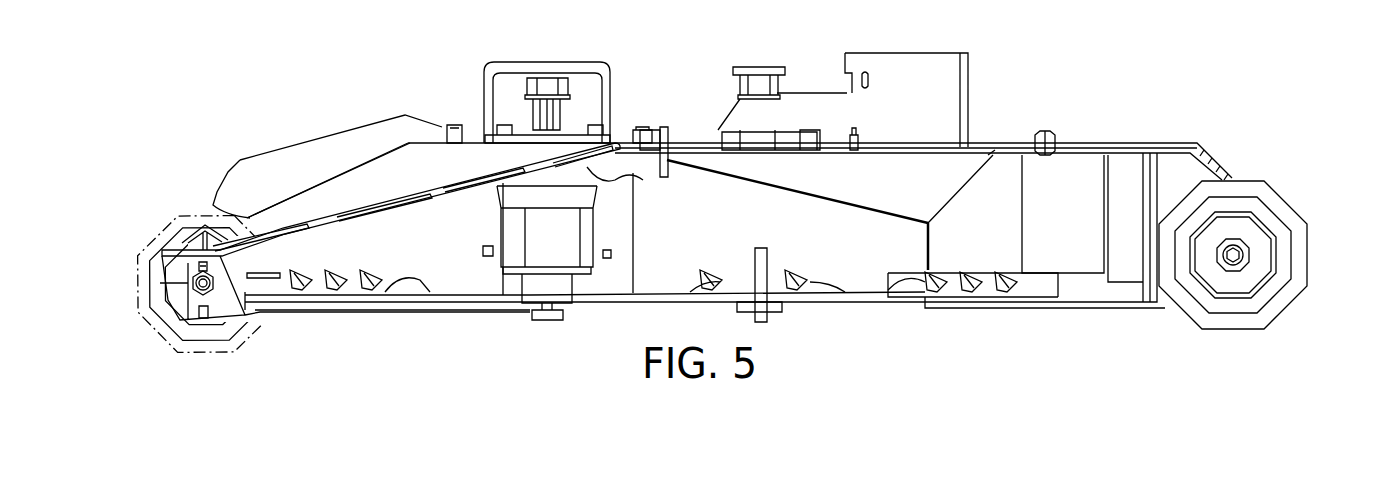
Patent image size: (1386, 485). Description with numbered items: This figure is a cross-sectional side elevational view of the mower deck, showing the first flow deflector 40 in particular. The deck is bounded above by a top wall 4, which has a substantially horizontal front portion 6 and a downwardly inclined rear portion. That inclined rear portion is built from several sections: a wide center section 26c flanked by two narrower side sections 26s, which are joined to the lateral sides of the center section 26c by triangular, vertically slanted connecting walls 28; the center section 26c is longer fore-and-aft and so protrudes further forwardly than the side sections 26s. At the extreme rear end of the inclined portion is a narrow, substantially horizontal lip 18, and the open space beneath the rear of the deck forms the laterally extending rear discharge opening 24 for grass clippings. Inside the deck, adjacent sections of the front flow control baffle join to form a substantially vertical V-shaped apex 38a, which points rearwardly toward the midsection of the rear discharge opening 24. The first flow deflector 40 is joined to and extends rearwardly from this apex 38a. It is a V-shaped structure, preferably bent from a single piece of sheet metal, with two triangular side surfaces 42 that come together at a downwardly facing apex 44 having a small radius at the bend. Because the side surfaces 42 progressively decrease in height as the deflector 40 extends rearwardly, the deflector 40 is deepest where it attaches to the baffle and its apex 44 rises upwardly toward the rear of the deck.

The top wall 4 is at (703, 219).
The front portion 6 is at (993, 148).
The lip 18 is at (183, 247).
The rear discharge opening 24 is at (137, 322).
The side section 26s is at (317, 190).
The center section 26c is at (427, 203).
The connecting wall 28 is at (439, 182).
The V-shaped apex 38a is at (930, 245).
The first flow deflector 40 is at (767, 192).
The side surface 42 is at (884, 190).
The apex 44 is at (715, 178).